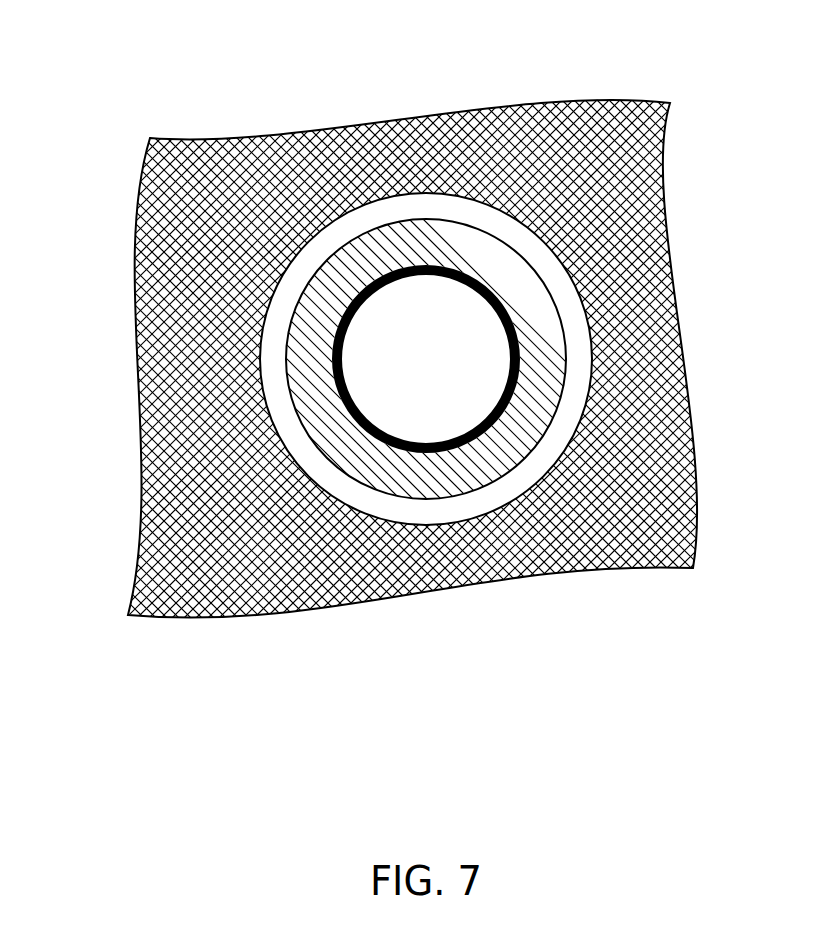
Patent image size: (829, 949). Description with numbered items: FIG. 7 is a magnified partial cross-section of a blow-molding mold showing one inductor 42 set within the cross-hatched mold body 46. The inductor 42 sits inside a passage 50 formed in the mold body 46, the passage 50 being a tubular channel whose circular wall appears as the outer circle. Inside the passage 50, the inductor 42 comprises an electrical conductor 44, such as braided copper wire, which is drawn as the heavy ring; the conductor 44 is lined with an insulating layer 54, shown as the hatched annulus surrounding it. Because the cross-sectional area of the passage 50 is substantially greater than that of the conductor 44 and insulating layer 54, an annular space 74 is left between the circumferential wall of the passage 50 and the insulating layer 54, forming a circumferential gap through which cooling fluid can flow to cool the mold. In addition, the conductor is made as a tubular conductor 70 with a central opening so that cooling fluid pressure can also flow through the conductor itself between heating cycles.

The inductor 42 is at (283, 383).
The electrical conductor 44 is at (415, 265).
The mold body 46 is at (213, 483).
The passage 50 is at (522, 217).
The insulating layer 54 is at (533, 313).
The tubular conductor 70 is at (493, 385).
The space 74 is at (285, 300).